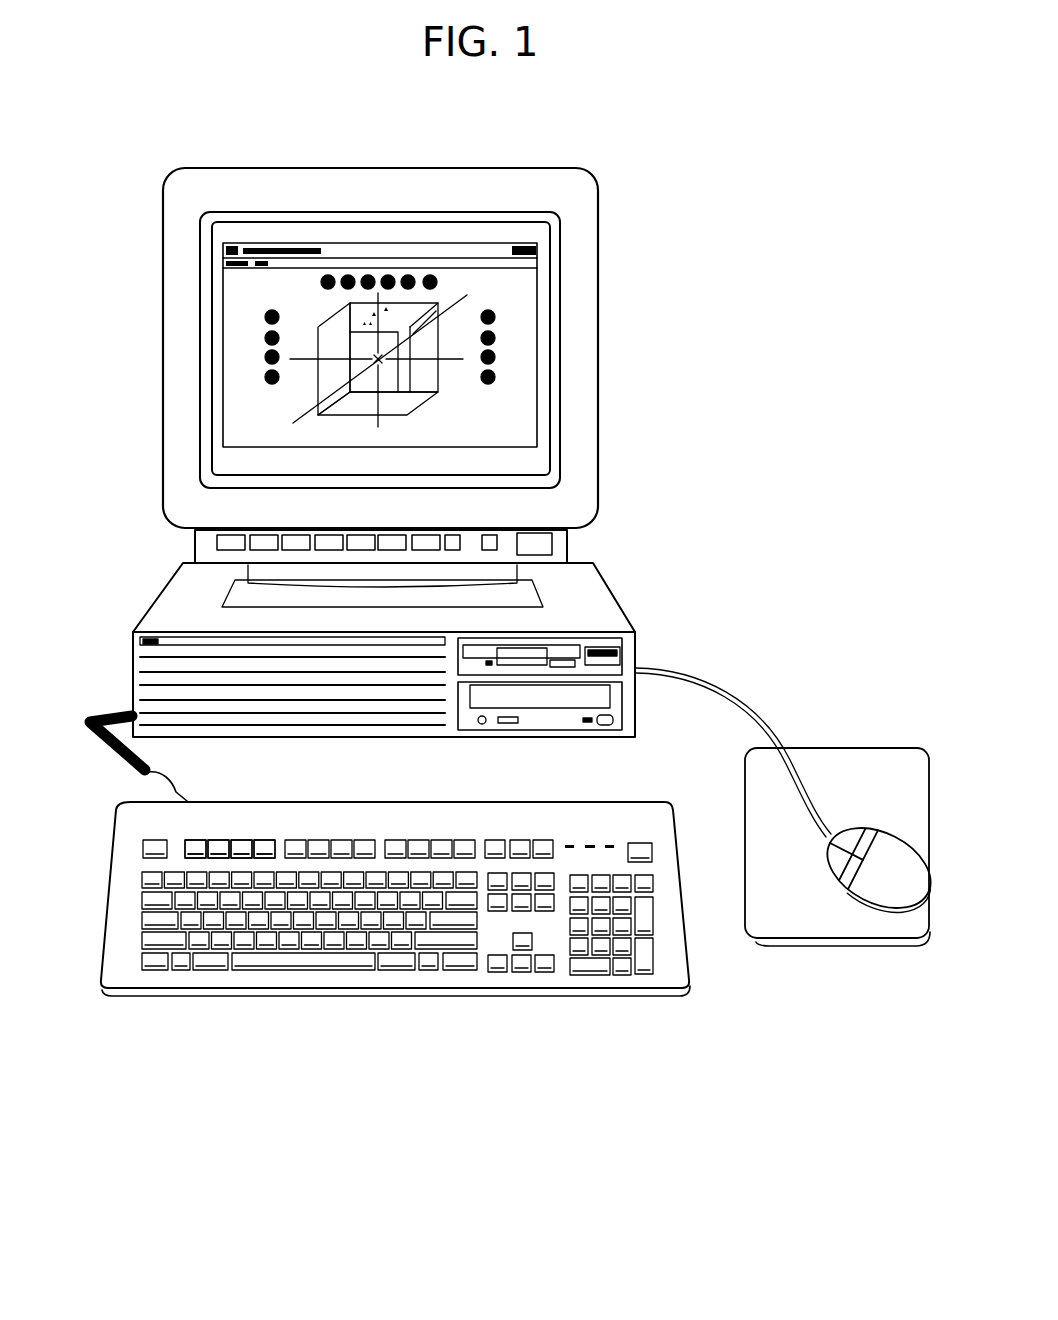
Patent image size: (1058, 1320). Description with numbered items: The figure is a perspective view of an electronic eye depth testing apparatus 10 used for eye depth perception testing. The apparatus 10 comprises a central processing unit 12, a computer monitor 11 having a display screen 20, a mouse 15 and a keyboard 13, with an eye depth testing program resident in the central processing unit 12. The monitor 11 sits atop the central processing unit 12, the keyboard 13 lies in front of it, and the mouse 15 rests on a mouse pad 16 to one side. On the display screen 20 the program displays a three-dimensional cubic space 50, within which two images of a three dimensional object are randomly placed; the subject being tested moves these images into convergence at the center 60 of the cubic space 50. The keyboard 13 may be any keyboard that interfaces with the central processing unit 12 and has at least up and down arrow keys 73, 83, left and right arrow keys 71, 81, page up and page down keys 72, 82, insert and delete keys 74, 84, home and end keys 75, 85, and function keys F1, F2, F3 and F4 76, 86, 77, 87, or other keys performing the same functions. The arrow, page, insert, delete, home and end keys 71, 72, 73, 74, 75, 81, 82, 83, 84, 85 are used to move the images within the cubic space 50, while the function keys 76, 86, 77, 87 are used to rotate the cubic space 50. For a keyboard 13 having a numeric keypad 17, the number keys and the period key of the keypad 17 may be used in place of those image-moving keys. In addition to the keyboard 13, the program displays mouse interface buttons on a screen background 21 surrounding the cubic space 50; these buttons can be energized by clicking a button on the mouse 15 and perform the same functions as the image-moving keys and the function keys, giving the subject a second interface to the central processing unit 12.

The electronic eye depth testing apparatus 10 is at (499, 650).
The computer monitor 11 is at (580, 200).
The central processing unit 12 is at (597, 592).
The keyboard 13 is at (404, 946).
The mouse 15 is at (901, 880).
The mouse pad 16 is at (842, 945).
The numeric keypad 17 is at (631, 945).
The display screen 20 is at (227, 458).
The screen background 21 is at (263, 340).
The three-dimensional cubic space 50 is at (403, 315).
The center 60 is at (372, 360).
The left arrow key 71 is at (500, 972).
The page up key 72 is at (547, 873).
The up arrow key 73 is at (535, 942).
The insert key 74 is at (498, 873).
The home key 75 is at (522, 873).
The F1 function key 76 is at (183, 840).
The F3 function key 77 is at (242, 840).
The right arrow key 81 is at (546, 972).
The page down key 82 is at (545, 903).
The down arrow key 83 is at (525, 972).
The delete key 84 is at (498, 905).
The end key 85 is at (515, 905).
The F2 function key 86 is at (217, 840).
The F4 function key 87 is at (270, 840).